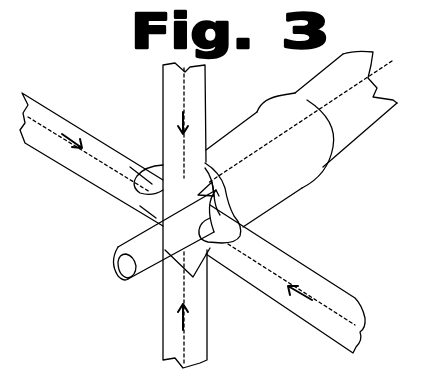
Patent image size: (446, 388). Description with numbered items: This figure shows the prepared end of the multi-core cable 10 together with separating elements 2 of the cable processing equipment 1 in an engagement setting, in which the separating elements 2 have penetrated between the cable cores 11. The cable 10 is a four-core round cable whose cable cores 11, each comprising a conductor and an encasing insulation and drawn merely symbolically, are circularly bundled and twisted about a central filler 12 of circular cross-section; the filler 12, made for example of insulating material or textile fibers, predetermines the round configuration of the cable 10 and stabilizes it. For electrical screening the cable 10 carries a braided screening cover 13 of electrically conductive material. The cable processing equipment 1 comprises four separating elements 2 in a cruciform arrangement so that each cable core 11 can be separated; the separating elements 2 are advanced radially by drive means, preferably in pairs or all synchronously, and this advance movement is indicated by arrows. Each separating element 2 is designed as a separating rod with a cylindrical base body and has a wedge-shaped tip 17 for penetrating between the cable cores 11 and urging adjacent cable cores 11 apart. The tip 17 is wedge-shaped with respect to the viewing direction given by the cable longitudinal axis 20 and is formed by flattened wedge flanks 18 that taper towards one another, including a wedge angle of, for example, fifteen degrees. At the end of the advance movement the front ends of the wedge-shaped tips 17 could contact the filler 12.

The cable processing equipment 1 is at (100, 63).
The separating element 2 is at (97, 140).
The multi-core cable 10 is at (256, 110).
The cable core 11 is at (128, 235).
The filler 12 is at (124, 284).
The braided screening cover 13 is at (300, 187).
The wedge-shaped tip 17 is at (150, 218).
The wedge flank 18 is at (160, 178).
The cable longitudinal axis 20 is at (382, 55).